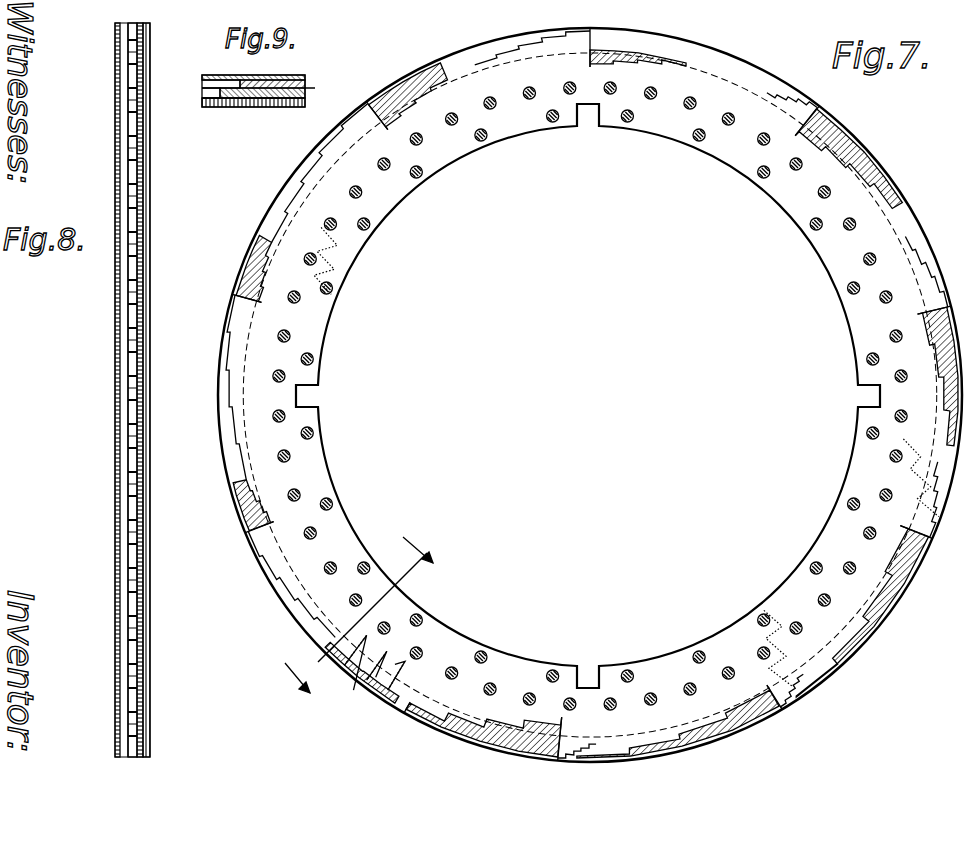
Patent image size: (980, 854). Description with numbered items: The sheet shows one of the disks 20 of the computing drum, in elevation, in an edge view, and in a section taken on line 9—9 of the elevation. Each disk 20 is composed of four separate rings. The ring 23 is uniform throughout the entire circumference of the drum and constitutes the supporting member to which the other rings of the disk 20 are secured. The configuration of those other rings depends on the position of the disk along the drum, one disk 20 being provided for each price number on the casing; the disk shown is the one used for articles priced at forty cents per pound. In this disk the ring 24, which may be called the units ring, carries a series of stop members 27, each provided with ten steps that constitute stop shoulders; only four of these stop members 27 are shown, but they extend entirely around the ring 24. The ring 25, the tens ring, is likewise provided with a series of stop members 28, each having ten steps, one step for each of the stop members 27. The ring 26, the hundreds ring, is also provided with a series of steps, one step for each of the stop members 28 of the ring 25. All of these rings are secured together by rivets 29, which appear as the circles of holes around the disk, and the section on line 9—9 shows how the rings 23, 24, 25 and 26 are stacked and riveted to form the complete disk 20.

In FIG. 7, the disk 20 is at (836, 268).
In FIG. 8, the disk 20 is at (147, 170).
In FIG. 7, the rivets 29 is at (300, 301).
In FIG. 9, the rivets 29 is at (284, 82).
In FIG. 7, the stop members 28 is at (273, 543).
In FIG. 7, the stop members 27 is at (352, 637).
In FIG. 7, the section line 9— 9 is at (356, 623).
In FIG. 8, the ring 23 is at (115, 450).
In FIG. 9, the ring 23 is at (216, 69).
In FIG. 8, the units ring 24 is at (147, 588).
In FIG. 9, the units ring 24 is at (296, 101).
In FIG. 8, the tens ring 25 is at (134, 565).
In FIG. 9, the tens ring 25 is at (302, 92).
In FIG. 8, the hundreds ring 26 is at (125, 558).
In FIG. 9, the hundreds ring 26 is at (301, 81).